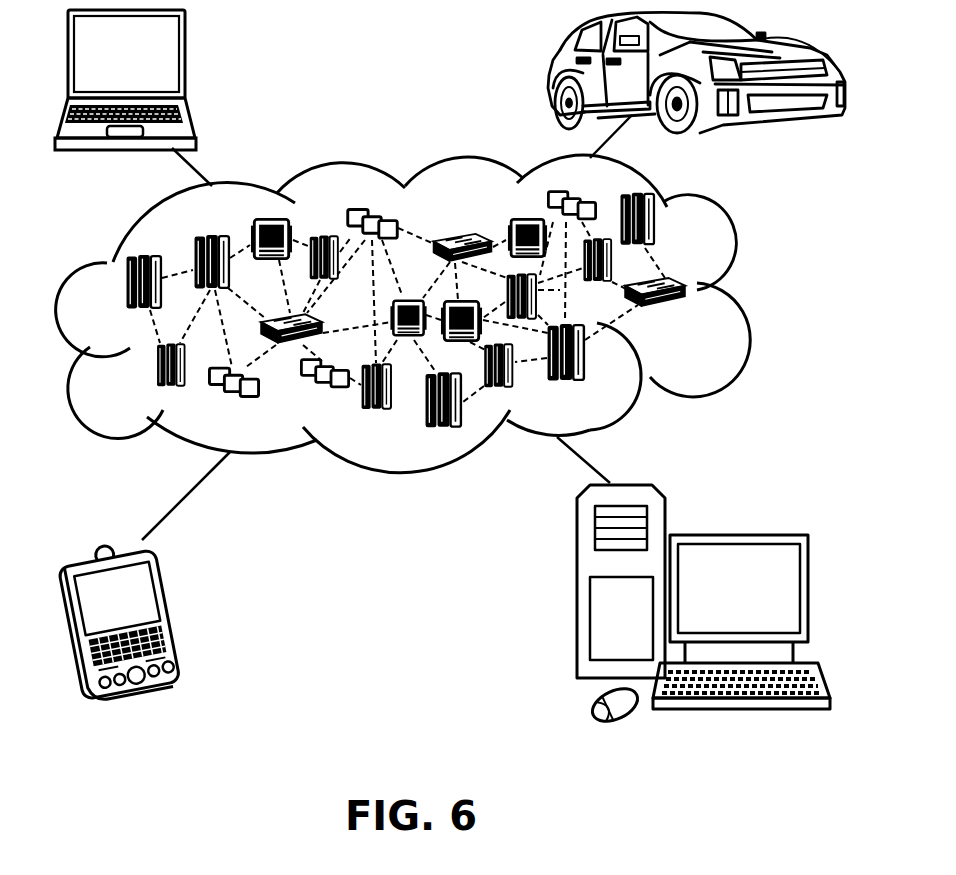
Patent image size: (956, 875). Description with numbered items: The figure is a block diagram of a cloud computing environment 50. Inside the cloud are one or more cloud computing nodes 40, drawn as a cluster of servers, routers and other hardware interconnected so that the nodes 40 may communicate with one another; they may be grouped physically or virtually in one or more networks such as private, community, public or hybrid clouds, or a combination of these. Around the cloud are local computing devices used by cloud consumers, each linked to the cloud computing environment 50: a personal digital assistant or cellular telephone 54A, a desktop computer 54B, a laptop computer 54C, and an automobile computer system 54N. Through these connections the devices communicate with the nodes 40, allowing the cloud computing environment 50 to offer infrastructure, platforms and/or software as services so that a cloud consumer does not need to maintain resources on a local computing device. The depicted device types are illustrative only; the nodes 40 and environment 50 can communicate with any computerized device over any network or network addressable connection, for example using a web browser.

The cloud computing environment 50 is at (735, 293).
The cloud computing nodes 40 is at (694, 320).
The personal digital assistant (PDA) or cellular telephone 54A is at (176, 613).
The desktop computer 54B is at (737, 535).
The laptop computer 54C is at (186, 62).
The automobile computer system 54N is at (553, 77).